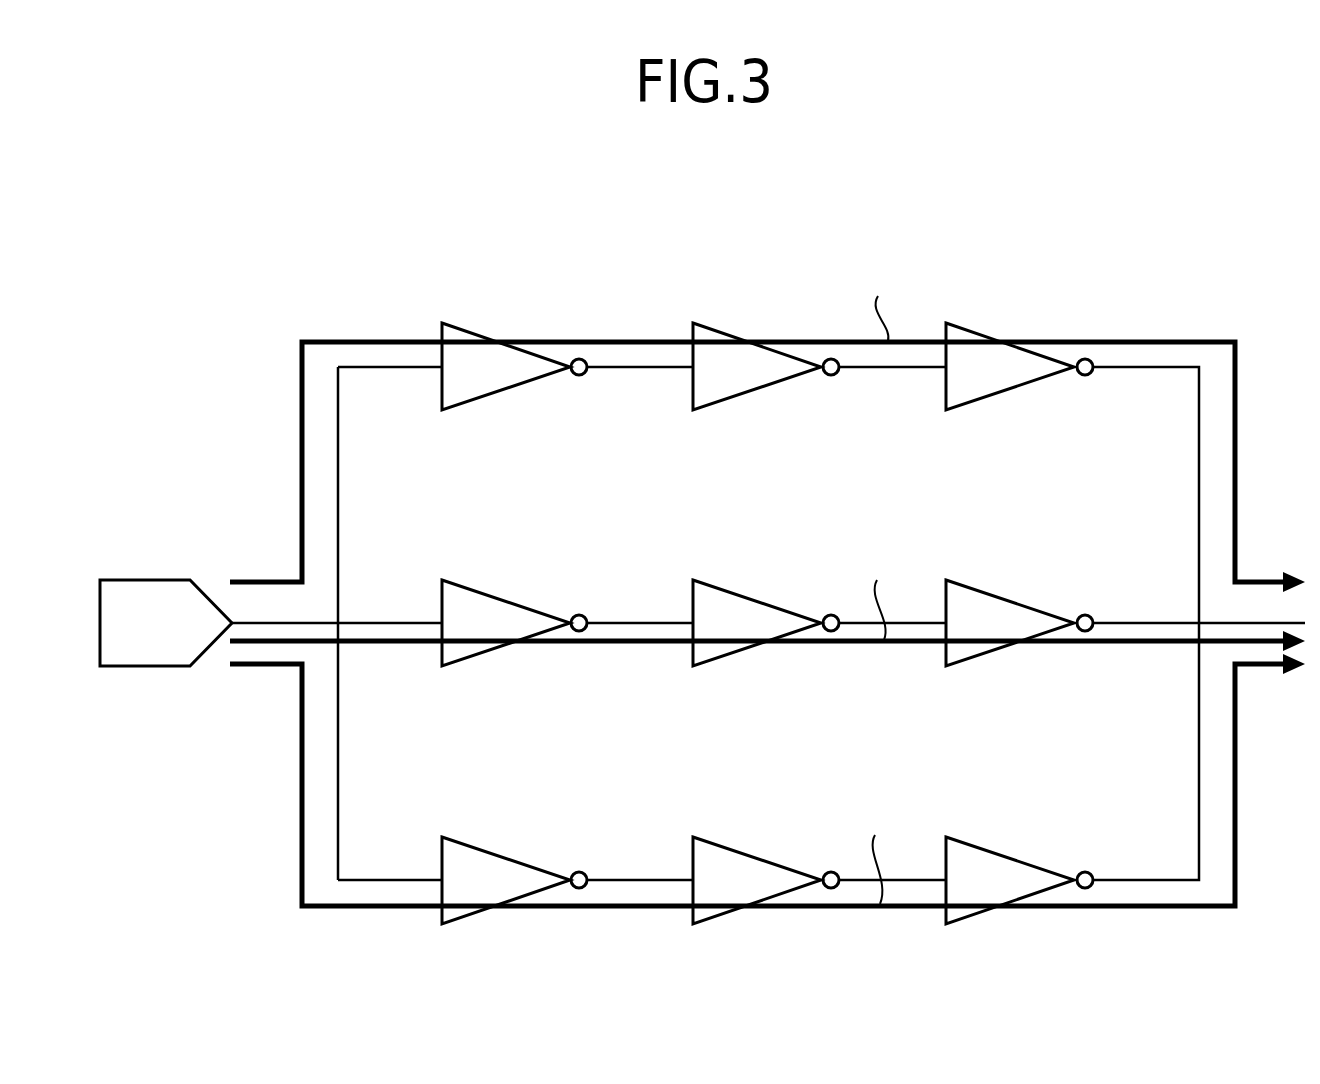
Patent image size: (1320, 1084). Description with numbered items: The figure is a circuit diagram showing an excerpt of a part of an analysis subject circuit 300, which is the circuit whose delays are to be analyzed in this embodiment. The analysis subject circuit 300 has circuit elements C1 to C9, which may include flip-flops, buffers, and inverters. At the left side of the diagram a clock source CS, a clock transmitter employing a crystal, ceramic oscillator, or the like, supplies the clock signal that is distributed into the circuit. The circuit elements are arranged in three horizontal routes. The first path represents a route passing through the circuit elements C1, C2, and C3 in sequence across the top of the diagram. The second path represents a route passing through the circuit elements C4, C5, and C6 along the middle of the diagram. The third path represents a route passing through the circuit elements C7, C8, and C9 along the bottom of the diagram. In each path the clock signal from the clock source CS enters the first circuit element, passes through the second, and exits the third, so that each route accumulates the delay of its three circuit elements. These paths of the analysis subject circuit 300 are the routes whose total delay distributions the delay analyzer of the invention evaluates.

The analysis subject circuit 300 is at (651, 262).
The clock source CS is at (166, 623).
The circuit element C1 is at (514, 366).
The circuit element C2 is at (766, 366).
The circuit element C3 is at (1019, 366).
The circuit element C4 is at (514, 623).
The circuit element C5 is at (766, 623).
The circuit element C6 is at (1019, 623).
The circuit element C7 is at (514, 880).
The circuit element C8 is at (766, 880).
The circuit element C9 is at (1019, 880).